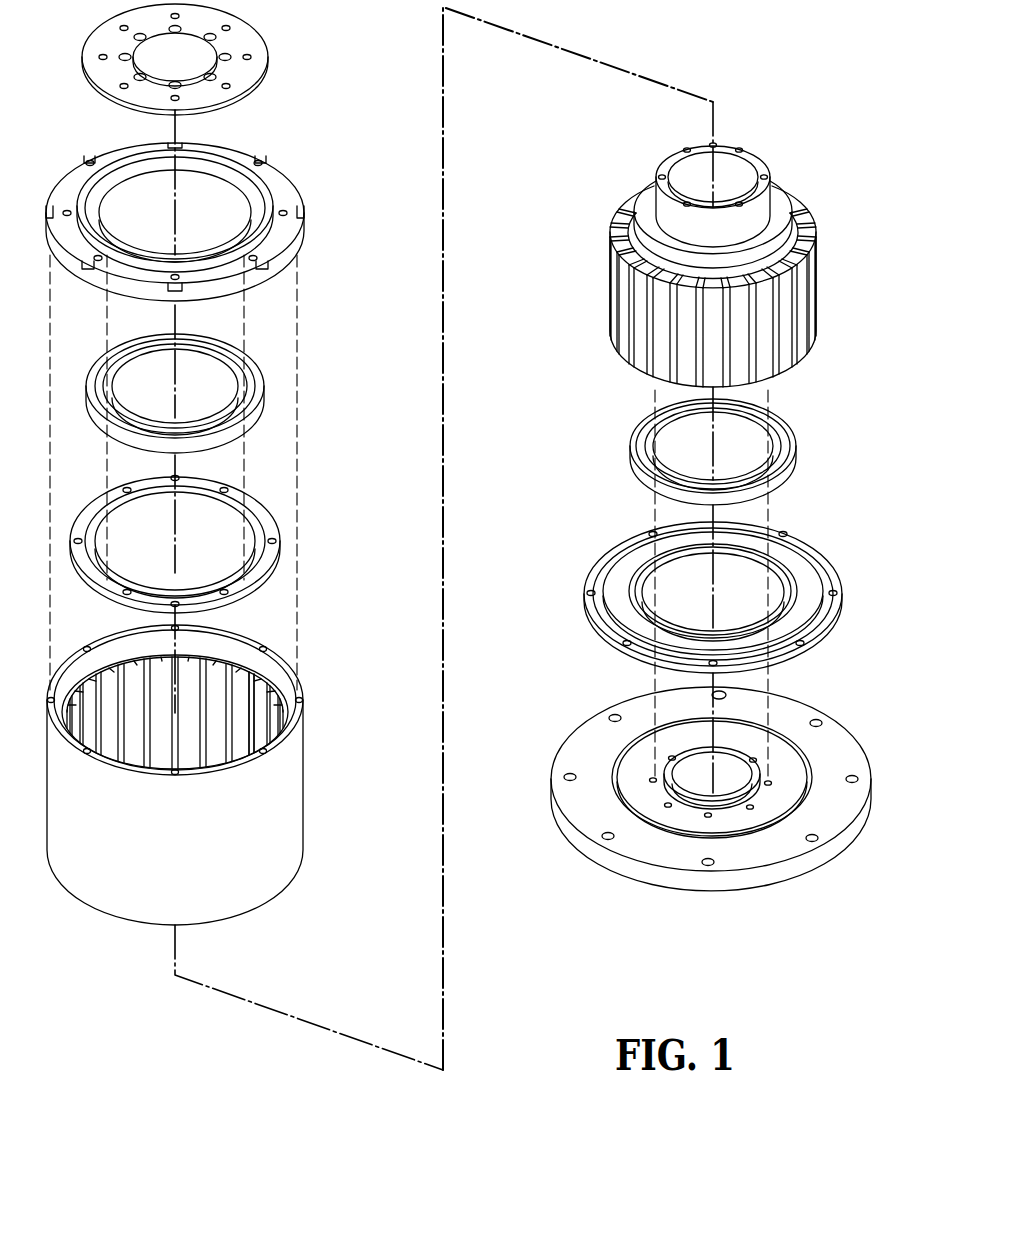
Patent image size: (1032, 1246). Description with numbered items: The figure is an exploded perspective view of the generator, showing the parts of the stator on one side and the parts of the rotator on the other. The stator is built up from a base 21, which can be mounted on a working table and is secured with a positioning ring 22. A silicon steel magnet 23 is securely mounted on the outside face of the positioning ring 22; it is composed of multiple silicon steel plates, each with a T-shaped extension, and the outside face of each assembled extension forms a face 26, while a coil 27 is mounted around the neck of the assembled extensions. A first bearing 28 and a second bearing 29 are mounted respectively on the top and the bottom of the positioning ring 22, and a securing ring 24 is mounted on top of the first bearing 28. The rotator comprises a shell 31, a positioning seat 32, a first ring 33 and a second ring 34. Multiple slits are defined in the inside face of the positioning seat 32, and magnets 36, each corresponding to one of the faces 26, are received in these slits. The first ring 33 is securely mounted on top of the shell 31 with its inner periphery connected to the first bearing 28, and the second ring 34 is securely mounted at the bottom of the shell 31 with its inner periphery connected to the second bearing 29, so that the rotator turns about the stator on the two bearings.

The base 21 is at (585, 745).
The positioning ring 22 is at (657, 238).
The silicon steel magnet 23 is at (790, 228).
The securing ring 24 is at (267, 55).
The face 26 is at (708, 257).
The coil 27 is at (793, 195).
The first bearing 28 is at (257, 415).
The second bearing 29 is at (635, 465).
The shell 31 is at (288, 798).
The positioning seat 32 is at (280, 701).
The first ring 33 is at (280, 185).
The second ring 34 is at (602, 583).
The magnets 36 is at (225, 682).